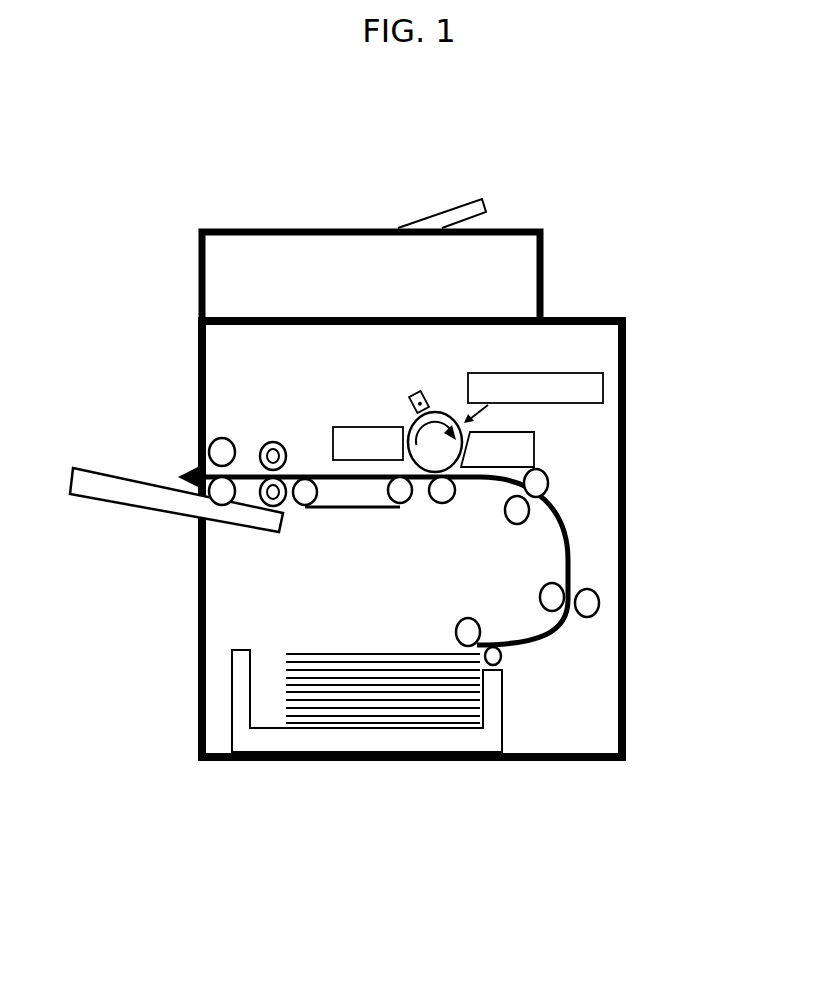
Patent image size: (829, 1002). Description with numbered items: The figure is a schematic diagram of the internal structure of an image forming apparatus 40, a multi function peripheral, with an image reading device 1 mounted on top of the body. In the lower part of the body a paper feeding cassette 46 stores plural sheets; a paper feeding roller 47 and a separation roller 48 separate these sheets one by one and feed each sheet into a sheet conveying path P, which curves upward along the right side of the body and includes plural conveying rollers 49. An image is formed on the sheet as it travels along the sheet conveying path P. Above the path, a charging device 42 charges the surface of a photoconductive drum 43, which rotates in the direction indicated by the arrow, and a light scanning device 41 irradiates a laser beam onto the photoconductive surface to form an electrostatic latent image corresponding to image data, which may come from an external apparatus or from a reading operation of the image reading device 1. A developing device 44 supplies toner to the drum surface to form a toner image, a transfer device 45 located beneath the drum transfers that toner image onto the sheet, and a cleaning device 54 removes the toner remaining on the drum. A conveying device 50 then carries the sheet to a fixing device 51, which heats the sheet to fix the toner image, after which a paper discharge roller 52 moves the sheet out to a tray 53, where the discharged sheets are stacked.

The image reading device 1 is at (512, 278).
The image forming apparatus 40 is at (634, 712).
The light scanning device 41 is at (588, 390).
The charging device 42 is at (418, 392).
The photoconductive drum 43 is at (417, 431).
The developing device 44 is at (512, 448).
The transfer device 45 is at (442, 503).
The paper feeding cassette 46 is at (422, 737).
The paper feeding roller 47 is at (455, 628).
The separation roller 48 is at (499, 663).
The conveying rollers 49 is at (548, 487).
The conveying device 50 is at (333, 508).
The fixing device 51 is at (273, 441).
The paper discharge roller 52 is at (220, 438).
The tray 53 is at (112, 492).
The cleaning device 54 is at (347, 433).
The sheet conveying path P is at (568, 552).